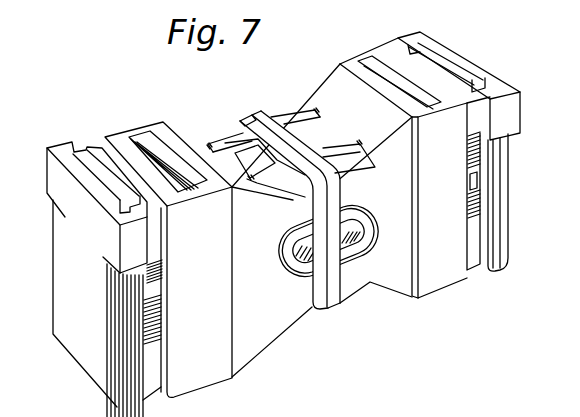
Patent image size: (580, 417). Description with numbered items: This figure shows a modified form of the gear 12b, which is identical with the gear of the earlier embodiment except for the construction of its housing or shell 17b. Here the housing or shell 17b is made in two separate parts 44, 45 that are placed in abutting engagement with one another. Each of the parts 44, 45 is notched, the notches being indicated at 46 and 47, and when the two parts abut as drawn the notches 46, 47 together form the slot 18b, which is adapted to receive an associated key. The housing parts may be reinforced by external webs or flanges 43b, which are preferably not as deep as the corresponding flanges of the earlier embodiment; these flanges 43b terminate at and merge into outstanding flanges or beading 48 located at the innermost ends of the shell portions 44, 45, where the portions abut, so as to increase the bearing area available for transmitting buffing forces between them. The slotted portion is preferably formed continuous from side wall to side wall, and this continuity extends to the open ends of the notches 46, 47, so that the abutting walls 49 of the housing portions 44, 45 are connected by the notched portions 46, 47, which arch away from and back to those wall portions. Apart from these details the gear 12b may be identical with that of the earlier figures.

The gear 12b is at (158, 121).
The housing or shell 17b is at (332, 79).
The external webs or flanges 43b is at (312, 118).
The housing part 44 is at (232, 373).
The housing part 45 is at (322, 199).
The notch 46 is at (282, 263).
The notch 47 is at (367, 230).
The outstanding flanges or beading 48 is at (246, 121).
The abutting walls 49 is at (327, 211).
The slot 18b is at (343, 245).